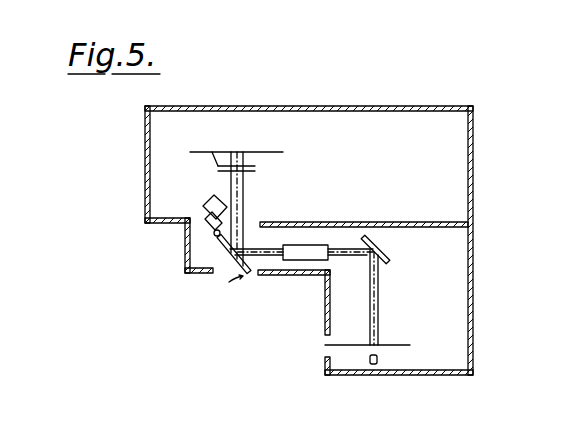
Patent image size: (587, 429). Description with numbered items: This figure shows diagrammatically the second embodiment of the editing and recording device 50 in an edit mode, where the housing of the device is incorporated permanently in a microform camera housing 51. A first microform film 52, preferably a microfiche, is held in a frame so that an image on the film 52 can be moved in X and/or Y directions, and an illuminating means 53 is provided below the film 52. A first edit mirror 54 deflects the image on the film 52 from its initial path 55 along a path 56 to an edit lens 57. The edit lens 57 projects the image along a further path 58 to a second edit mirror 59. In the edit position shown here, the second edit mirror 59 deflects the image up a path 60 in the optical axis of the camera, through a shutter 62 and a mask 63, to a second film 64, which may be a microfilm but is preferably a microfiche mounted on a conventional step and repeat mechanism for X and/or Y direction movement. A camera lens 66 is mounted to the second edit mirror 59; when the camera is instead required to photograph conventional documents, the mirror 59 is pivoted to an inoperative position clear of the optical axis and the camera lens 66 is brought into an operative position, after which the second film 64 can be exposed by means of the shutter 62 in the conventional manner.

The editing and recording device 50 is at (473, 283).
The microform camera housing 51 is at (473, 168).
The first microform film 52 is at (410, 345).
The illuminating means 53 is at (378, 363).
The first edit mirror 54 is at (385, 254).
The path 55 is at (377, 313).
The path 56 is at (336, 278).
The edit lens 57 is at (312, 245).
The path 58 is at (249, 244).
The second edit mirror 59 is at (228, 257).
The path 60 is at (237, 178).
The shutter 62 is at (250, 171).
The mask 63 is at (217, 160).
The second film 64 is at (272, 152).
The camera lens 66 is at (208, 208).